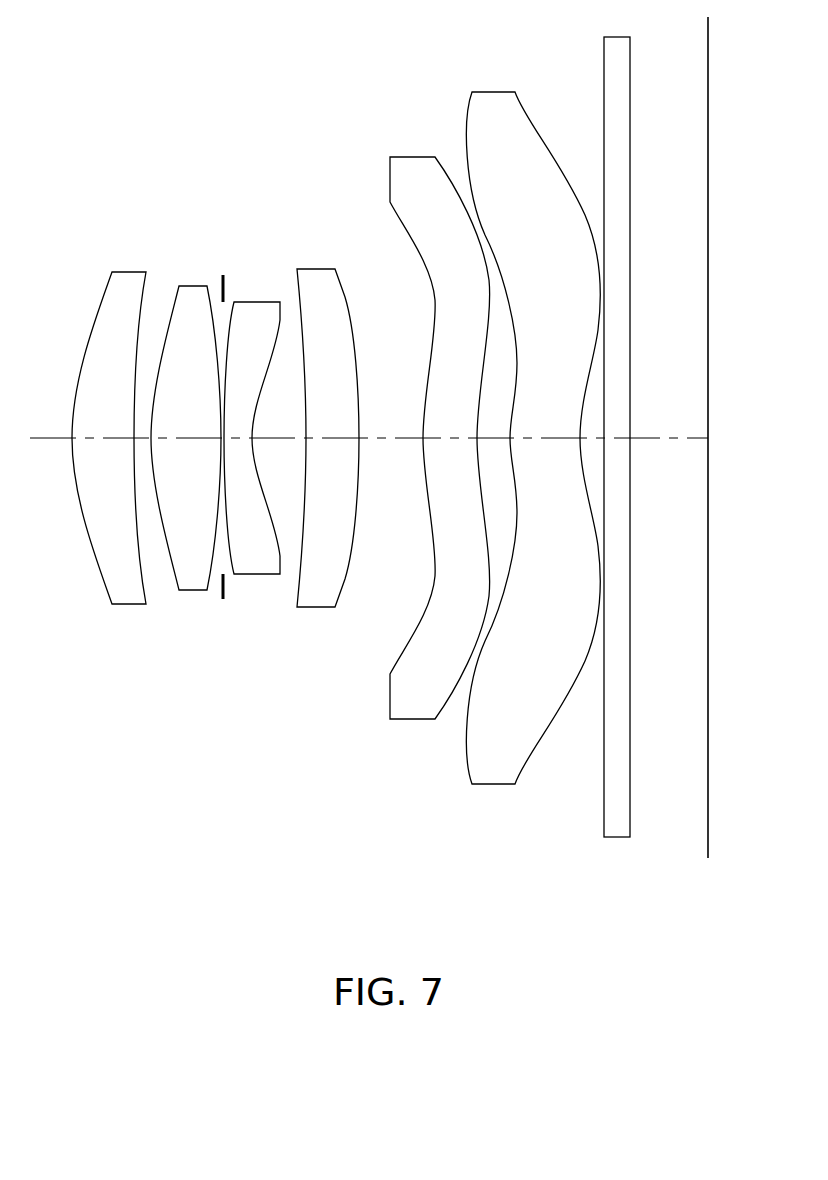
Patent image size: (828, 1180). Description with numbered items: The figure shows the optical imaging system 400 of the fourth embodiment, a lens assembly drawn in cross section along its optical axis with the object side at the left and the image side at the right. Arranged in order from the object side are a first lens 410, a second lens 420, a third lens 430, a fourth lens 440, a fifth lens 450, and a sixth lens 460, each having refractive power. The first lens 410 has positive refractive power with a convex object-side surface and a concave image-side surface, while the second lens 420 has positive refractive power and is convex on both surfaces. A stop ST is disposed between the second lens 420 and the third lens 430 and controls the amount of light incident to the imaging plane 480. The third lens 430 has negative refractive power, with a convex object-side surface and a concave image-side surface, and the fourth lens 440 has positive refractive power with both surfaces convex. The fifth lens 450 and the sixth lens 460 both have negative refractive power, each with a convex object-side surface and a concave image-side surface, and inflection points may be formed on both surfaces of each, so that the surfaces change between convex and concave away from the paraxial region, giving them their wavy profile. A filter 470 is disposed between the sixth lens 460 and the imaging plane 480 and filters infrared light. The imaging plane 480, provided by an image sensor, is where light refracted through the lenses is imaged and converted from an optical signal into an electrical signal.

The optical imaging system 400 is at (373, 469).
The first lens 410 is at (120, 604).
The second lens 420 is at (187, 590).
The stop ST is at (227, 290).
The third lens 430 is at (253, 574).
The fourth lens 440 is at (317, 607).
The fifth lens 450 is at (415, 719).
The sixth lens 460 is at (490, 784).
The filter 470 is at (618, 837).
The imaging plane 480 is at (707, 842).